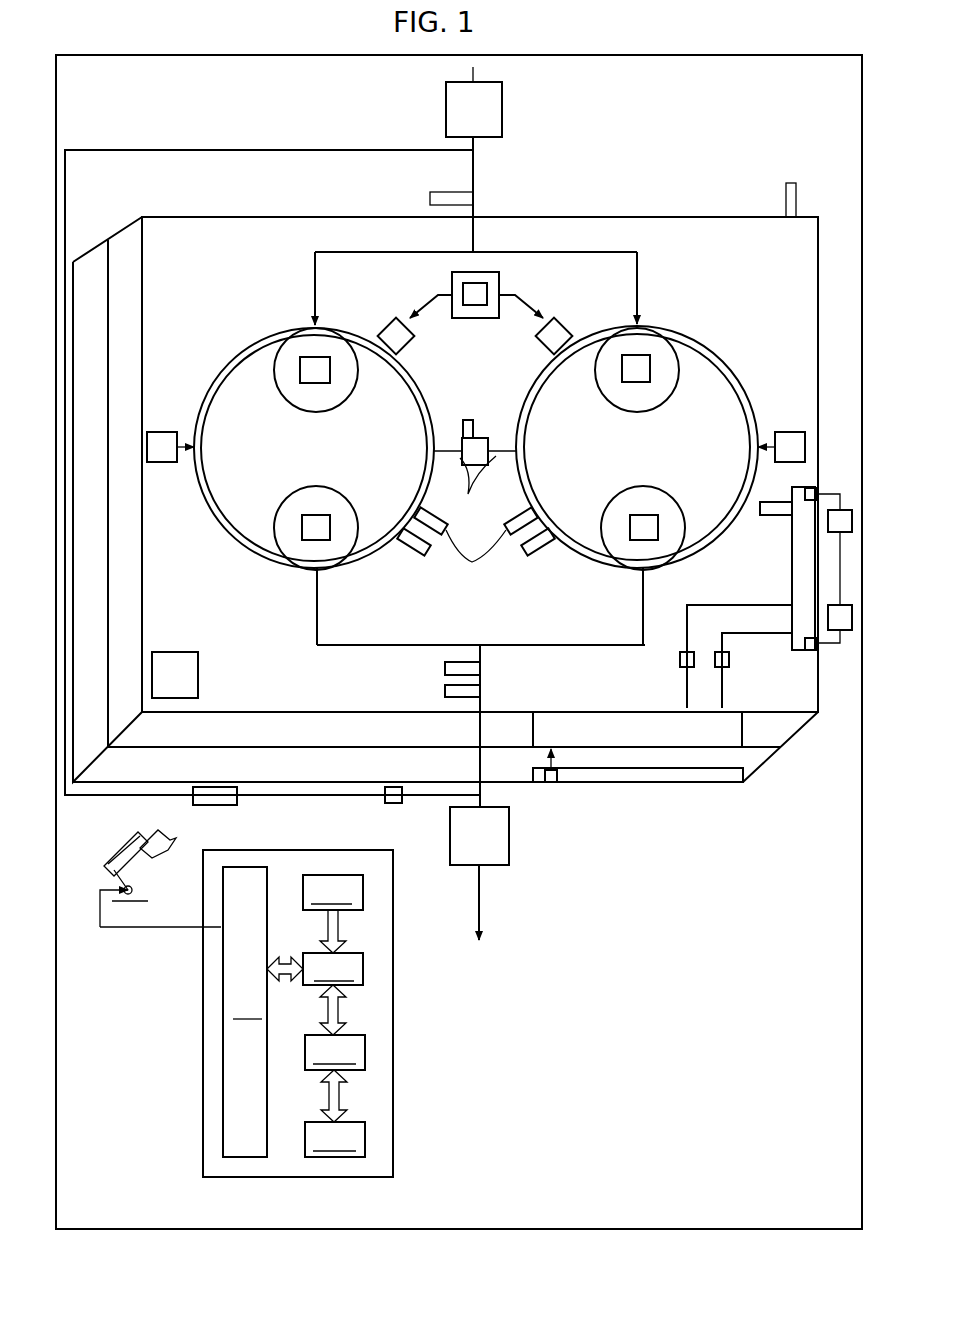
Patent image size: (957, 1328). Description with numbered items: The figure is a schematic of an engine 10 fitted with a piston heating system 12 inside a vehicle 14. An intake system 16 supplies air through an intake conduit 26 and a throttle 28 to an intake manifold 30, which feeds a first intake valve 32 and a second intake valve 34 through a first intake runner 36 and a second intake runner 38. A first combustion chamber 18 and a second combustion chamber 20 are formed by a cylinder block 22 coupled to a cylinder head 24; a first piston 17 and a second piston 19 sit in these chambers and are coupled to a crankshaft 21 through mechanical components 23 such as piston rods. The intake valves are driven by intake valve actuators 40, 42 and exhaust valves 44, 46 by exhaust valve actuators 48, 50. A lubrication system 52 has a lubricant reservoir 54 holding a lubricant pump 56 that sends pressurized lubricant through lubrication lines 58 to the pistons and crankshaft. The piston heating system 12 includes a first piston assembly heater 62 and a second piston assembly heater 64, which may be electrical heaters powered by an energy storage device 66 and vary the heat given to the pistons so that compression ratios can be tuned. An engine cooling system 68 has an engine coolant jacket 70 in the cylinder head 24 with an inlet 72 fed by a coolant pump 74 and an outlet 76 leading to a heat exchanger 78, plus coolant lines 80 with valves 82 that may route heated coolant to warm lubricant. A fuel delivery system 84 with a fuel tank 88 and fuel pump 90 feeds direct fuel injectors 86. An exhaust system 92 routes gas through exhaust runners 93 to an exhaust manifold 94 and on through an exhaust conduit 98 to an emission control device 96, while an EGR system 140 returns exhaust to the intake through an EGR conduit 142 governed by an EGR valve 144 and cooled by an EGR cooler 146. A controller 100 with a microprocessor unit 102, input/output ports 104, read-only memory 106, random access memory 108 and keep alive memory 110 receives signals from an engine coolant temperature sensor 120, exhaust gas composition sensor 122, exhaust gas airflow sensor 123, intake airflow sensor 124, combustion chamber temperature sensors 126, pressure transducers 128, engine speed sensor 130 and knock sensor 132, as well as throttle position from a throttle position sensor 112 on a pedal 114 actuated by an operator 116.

The engine 10 is at (218, 192).
The piston heating system 12 is at (824, 440).
The vehicle 14 is at (98, 56).
The intake system 16 is at (366, 126).
The first piston 17 is at (222, 375).
The first combustion chamber 18 is at (262, 337).
The second piston 19 is at (722, 368).
The second combustion chamber 20 is at (700, 344).
The crankshaft 21 is at (482, 438).
The cylinder block 22 is at (79, 257).
The mechanical components 23 is at (478, 486).
The cylinder head 24 is at (126, 228).
The intake conduit 26 is at (476, 182).
The throttle 28 is at (446, 128).
The intake manifold 30 is at (553, 252).
The first intake valve 32 is at (275, 370).
The second intake valve 34 is at (595, 370).
The first intake runner 36 is at (316, 292).
The second intake runner 38 is at (638, 292).
The intake valve actuator 40 is at (308, 383).
The intake valve actuator 42 is at (628, 382).
The exhaust valve 44 is at (276, 527).
The exhaust valve 46 is at (602, 527).
The exhaust valve actuator 48 is at (307, 515).
The exhaust valve actuator 50 is at (634, 515).
The lubrication system 52 is at (615, 803).
The lubricant reservoir 54 is at (602, 768).
The lubricant pump 56 is at (552, 783).
The lubrication lines 58 is at (537, 712).
The first piston assembly heater 62 is at (162, 432).
The second piston assembly heater 64 is at (790, 432).
The energy storage device 66 is at (178, 652).
The engine cooling system 68 is at (826, 660).
The engine coolant jacket 70 is at (790, 575).
The inlet 72 is at (814, 486).
The coolant pump 74 is at (843, 510).
The outlet 76 is at (806, 650).
The heat exchanger 78 is at (843, 630).
The coolant lines 80 is at (695, 605).
The valves 82 is at (680, 660).
The fuel delivery system 84 is at (395, 298).
The fuel injectors 86 is at (385, 328).
The fuel tank 88 is at (499, 290).
The fuel pump 90 is at (475, 305).
The exhaust system 92 is at (279, 628).
The exhaust runners 93 is at (493, 606).
The exhaust manifold 94 is at (378, 645).
The emission control device 96 is at (450, 835).
The exhaust conduit 98 is at (477, 913).
The controller 100 is at (358, 850).
The microprocessor unit 102 is at (354, 953).
The input/output ports 104 is at (267, 918).
The read-only memory 106 is at (352, 875).
The random access memory 108 is at (355, 1035).
The keep alive memory 110 is at (355, 1122).
The throttle position sensor 112 is at (134, 893).
The pedal 114 is at (110, 874).
The operator 116 is at (152, 856).
The engine coolant temperature sensor 120 is at (776, 515).
The exhaust gas composition sensor 122 is at (445, 667).
The exhaust gas airflow sensor 123 is at (445, 691).
The intake airflow sensor 124 is at (430, 198).
The combustion chamber temperature sensors 126 is at (408, 550).
The pressure transducers 128 is at (476, 556).
The engine speed sensor 130 is at (468, 420).
The knock sensor 132 is at (786, 197).
The exhaust gas recirculation (EGR) system 140 is at (338, 826).
The EGR conduit 142 is at (332, 797).
The EGR valve 144 is at (392, 803).
The EGR cooler 146 is at (216, 805).